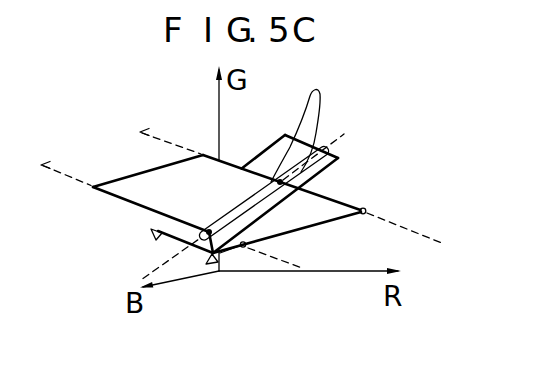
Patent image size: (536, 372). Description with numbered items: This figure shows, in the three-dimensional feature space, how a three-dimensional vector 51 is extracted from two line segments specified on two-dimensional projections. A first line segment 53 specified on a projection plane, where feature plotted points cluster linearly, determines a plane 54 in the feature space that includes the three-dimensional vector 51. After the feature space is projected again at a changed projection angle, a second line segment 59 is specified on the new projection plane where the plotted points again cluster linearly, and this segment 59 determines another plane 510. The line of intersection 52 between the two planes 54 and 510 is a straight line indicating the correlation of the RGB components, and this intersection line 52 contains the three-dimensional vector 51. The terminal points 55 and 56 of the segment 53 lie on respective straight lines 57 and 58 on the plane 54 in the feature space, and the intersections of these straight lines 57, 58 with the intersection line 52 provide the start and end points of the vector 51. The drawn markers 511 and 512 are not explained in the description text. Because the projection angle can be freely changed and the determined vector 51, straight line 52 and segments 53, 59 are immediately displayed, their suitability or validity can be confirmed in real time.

The three-dimensional vector 51 is at (236, 211).
The intersection line 52 is at (352, 139).
The line segment 53 is at (319, 225).
The plane 54 is at (139, 174).
The terminal point 55 is at (245, 247).
The terminal point 56 is at (366, 208).
The straight line 57 is at (78, 155).
The straight line 58 is at (167, 142).
The line segment 59 is at (173, 243).
The plane 510 is at (273, 155).
The marker 511 is at (206, 265).
The marker 512 is at (151, 232).